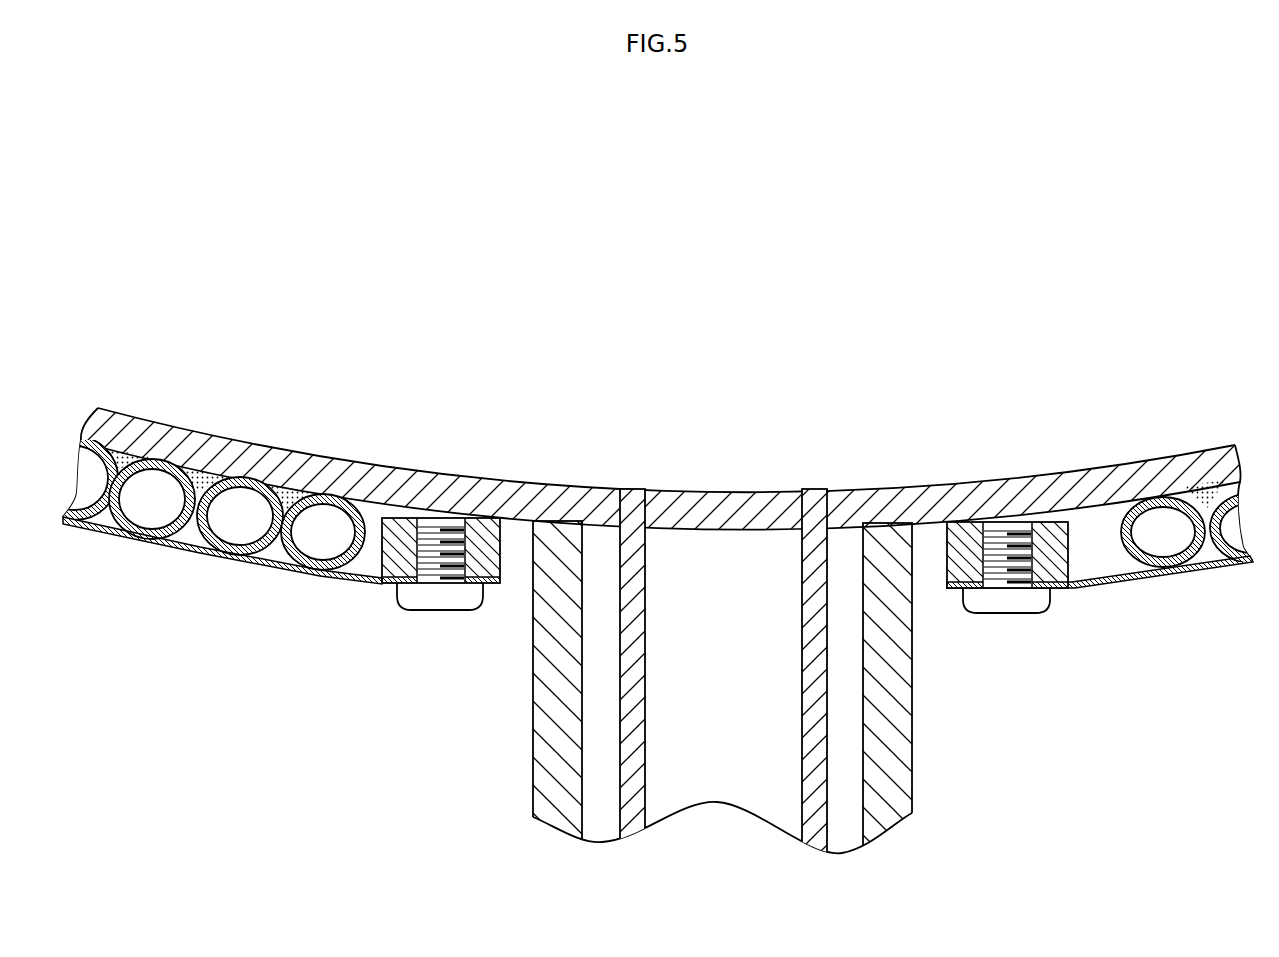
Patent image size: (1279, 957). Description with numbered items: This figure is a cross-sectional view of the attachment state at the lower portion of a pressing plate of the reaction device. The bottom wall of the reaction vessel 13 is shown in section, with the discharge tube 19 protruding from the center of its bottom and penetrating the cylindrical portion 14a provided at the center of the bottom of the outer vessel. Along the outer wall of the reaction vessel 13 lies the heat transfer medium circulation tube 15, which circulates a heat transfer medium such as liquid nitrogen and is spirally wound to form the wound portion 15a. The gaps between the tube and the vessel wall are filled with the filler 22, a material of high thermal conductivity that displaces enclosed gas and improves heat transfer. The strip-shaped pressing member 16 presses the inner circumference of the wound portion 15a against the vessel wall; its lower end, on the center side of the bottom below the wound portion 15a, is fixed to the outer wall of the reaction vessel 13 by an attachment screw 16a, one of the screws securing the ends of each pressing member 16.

The reaction vessel 13 is at (1091, 475).
The filler 22 is at (204, 468).
The heat transfer medium circulation tube 15 is at (195, 550).
The wound portion 15a is at (1195, 565).
The pressing member 16 is at (278, 570).
The attachment screw 16a is at (436, 598).
The cylindrical portion 14a is at (548, 736).
The discharge tube 19 is at (633, 700).